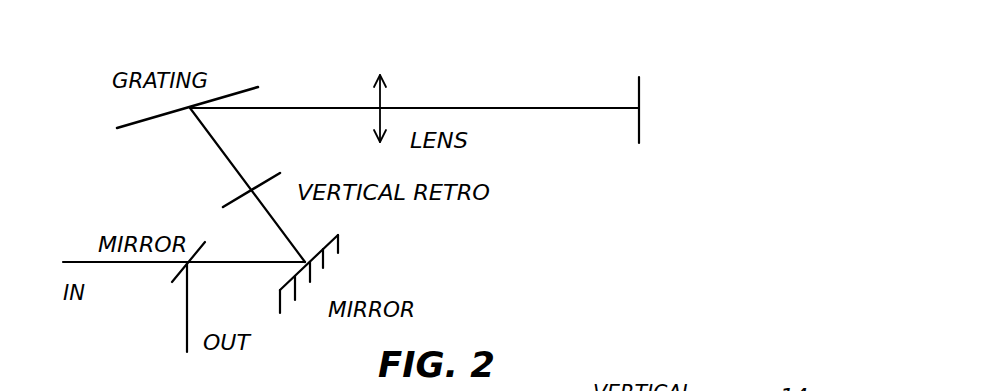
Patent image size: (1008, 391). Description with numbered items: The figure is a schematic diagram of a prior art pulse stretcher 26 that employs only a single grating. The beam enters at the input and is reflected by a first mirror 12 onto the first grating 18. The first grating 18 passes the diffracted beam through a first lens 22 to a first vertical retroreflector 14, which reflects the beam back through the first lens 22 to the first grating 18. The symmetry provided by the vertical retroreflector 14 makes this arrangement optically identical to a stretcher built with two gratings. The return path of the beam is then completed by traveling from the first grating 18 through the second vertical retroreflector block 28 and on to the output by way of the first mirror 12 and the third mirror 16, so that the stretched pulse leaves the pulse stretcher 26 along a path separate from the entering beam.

The first mirror 12 is at (340, 238).
The first vertical retroreflector 14 is at (640, 98).
The third mirror 16 is at (175, 281).
The first grating 18 is at (252, 89).
The first lens 22 is at (380, 99).
The pulse stretcher 26 is at (757, 86).
The second vertical retroreflector block 28 is at (236, 193).